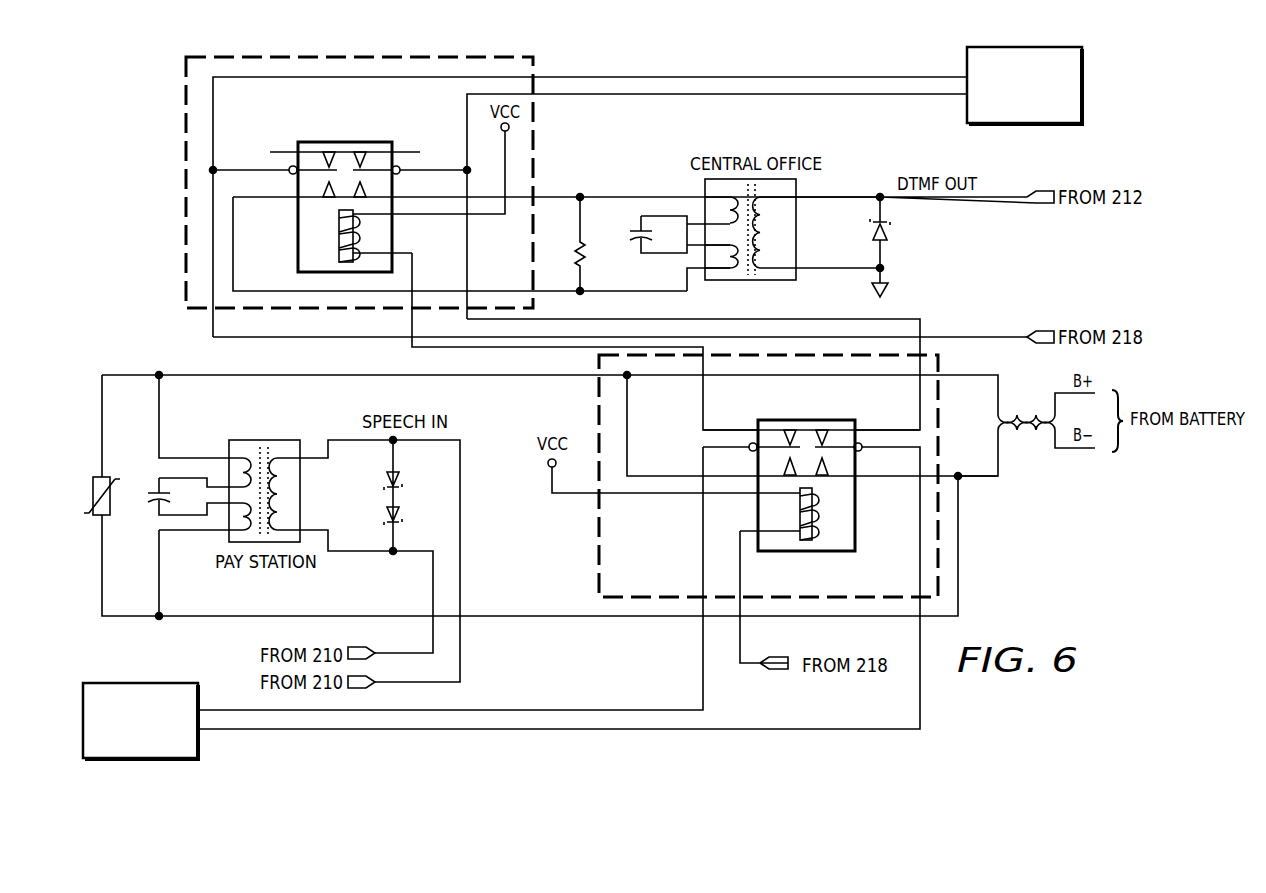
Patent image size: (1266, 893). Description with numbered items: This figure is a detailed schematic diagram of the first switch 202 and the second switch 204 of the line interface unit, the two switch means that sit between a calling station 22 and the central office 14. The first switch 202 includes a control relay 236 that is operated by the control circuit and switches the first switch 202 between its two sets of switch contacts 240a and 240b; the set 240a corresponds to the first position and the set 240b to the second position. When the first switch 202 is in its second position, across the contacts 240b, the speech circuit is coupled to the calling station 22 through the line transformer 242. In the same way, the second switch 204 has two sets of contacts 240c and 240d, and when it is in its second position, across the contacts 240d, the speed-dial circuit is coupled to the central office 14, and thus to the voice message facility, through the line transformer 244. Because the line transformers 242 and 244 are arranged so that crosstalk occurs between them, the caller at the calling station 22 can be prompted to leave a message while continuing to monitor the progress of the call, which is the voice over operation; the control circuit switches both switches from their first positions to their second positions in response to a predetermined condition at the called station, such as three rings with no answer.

The central office 14 is at (1083, 84).
The calling station 22 is at (142, 682).
The first switch 202 is at (599, 527).
The second switch 204 is at (185, 263).
The control relay 236 is at (812, 552).
The switch contacts 240a is at (722, 428).
The switch contacts 240b is at (664, 474).
The switch contacts 240c is at (242, 167).
The switch contacts 240d is at (272, 201).
The line transformer 242 is at (273, 438).
The line transformer 244 is at (797, 212).